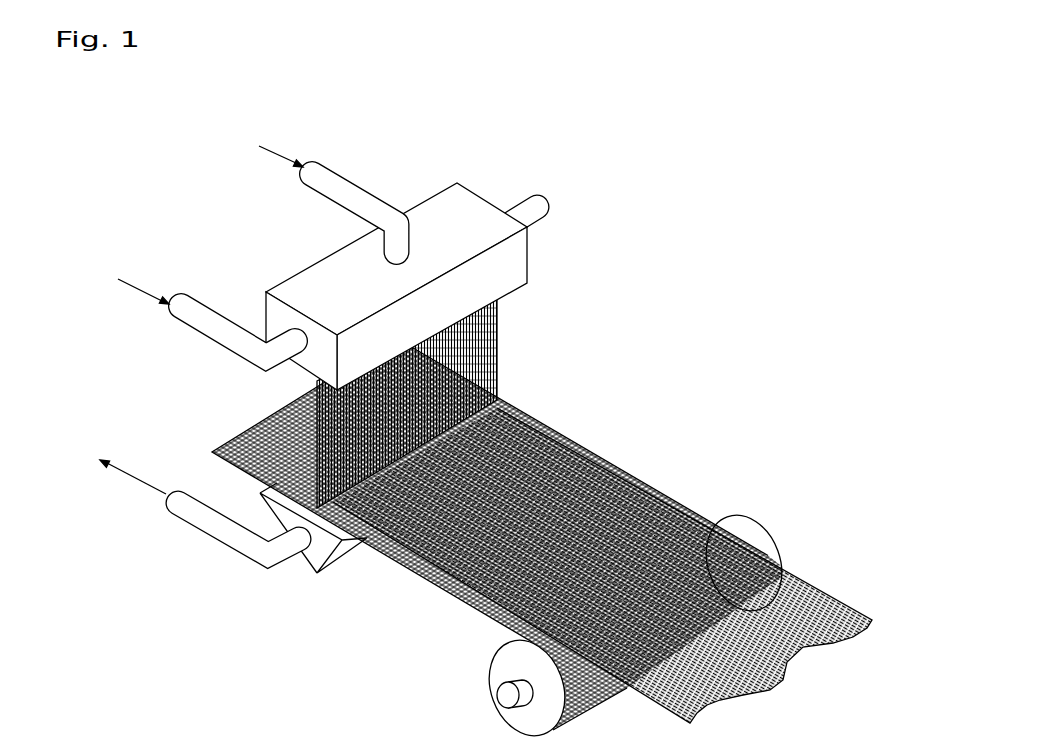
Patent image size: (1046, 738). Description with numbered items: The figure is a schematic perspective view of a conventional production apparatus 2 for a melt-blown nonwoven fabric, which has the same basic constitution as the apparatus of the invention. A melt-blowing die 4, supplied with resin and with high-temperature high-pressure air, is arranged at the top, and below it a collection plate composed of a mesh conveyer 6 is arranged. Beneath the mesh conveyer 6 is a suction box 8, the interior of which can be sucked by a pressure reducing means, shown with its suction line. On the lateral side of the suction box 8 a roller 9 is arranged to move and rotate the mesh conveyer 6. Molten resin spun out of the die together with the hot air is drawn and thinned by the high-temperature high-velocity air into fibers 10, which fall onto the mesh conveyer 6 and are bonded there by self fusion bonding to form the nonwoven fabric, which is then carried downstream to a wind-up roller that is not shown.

The production apparatus 2 is at (623, 230).
The melt-blowing die 4 is at (432, 217).
The mesh conveyer 6 is at (250, 424).
The suction box 8 is at (339, 575).
The roller 9 is at (744, 525).
The fibers 10 is at (498, 352).